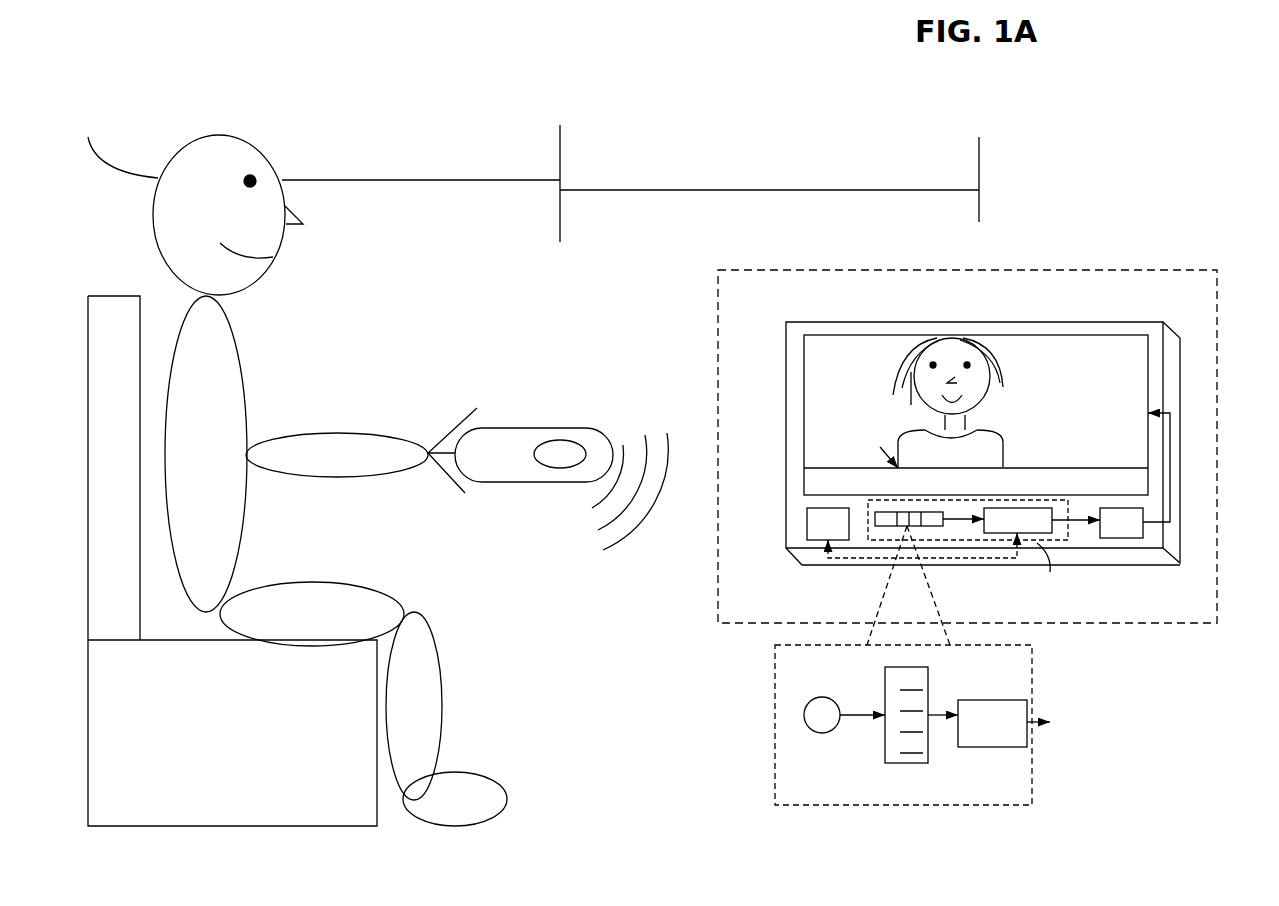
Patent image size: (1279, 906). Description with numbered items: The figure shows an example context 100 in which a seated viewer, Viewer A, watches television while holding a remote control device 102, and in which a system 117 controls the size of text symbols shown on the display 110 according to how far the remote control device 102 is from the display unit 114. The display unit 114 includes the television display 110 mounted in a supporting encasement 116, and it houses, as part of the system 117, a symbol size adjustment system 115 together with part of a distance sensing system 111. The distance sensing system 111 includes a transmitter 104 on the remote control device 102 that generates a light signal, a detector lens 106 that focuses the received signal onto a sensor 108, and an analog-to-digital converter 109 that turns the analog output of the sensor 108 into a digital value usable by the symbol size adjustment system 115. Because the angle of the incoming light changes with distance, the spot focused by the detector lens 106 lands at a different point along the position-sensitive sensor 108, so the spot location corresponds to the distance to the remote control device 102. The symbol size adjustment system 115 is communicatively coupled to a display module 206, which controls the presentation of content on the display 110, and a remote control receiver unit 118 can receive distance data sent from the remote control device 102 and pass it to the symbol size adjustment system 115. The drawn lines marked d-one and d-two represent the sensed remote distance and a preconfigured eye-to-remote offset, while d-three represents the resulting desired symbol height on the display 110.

The example context 100 is at (1163, 98).
The remote control device 102 is at (492, 482).
The transmitter 104 is at (560, 452).
The detector lens 106 is at (823, 733).
The sensor 108 is at (925, 747).
The analog-to-digital converter 109 is at (990, 747).
The television display 110 is at (1000, 322).
The distance sensing system 111 is at (775, 678).
The display unit 114 is at (1147, 623).
The symbol size adjustment system 115 is at (1018, 520).
The supporting encasement 116 is at (800, 365).
The system for controlling text symbol display size 117 is at (1066, 528).
The remote control receiver unit 118 is at (828, 524).
The display module 206 is at (1121, 523).